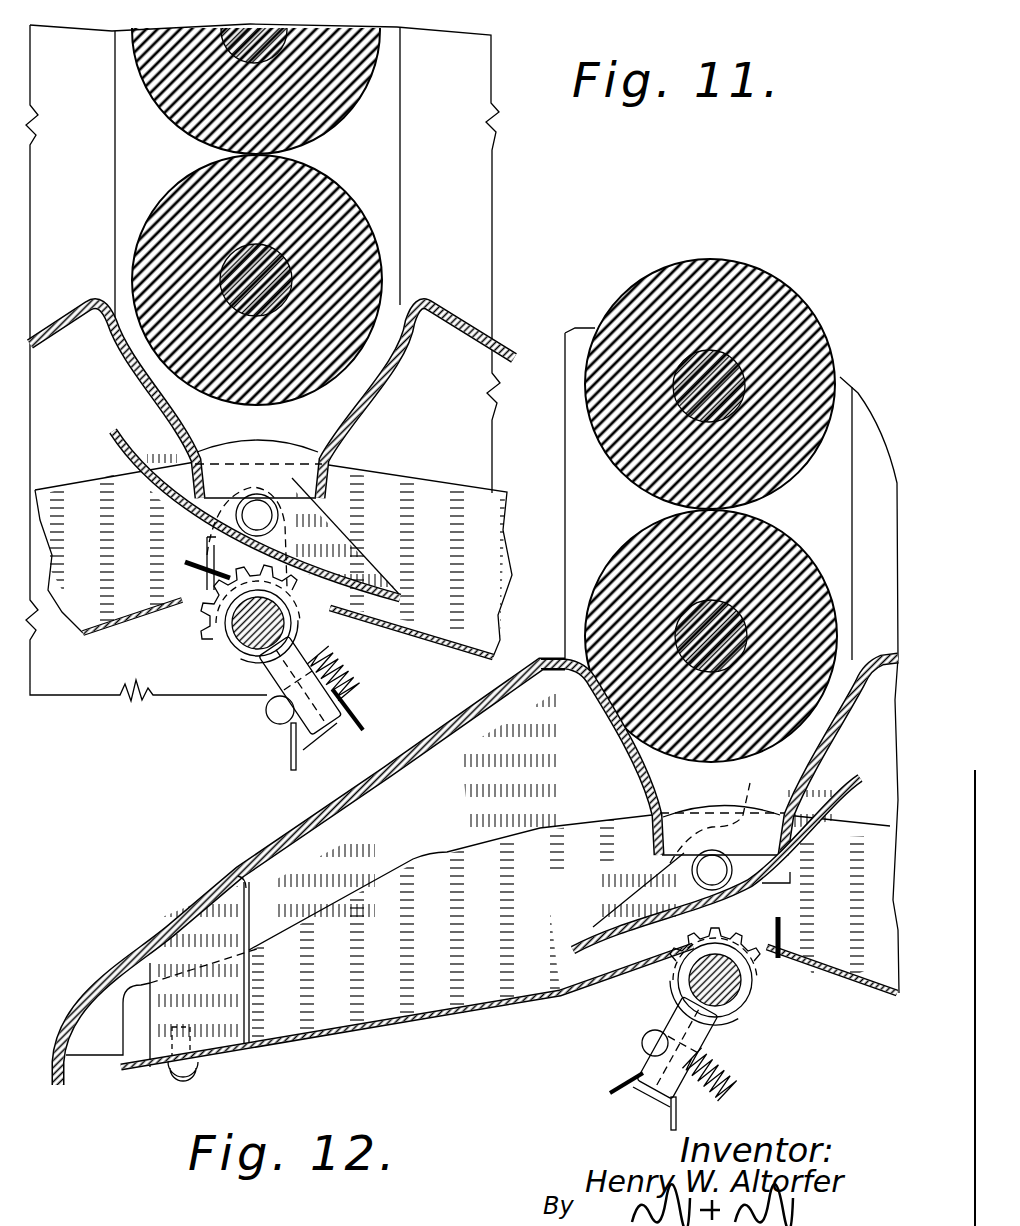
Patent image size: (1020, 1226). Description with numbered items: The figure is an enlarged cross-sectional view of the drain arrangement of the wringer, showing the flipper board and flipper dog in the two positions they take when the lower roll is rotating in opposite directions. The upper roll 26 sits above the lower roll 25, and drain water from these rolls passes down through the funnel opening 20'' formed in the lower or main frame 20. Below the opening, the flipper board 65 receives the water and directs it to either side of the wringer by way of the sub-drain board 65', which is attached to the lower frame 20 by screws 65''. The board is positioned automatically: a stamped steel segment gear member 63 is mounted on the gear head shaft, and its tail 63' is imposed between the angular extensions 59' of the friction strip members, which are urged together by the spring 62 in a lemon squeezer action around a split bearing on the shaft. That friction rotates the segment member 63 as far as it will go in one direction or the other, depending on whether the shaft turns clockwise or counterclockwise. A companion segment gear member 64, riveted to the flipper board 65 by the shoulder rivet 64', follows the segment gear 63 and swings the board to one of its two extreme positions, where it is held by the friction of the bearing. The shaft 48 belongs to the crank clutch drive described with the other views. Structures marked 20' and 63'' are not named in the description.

In FIG. 12, the lower or main frame 20 is at (311, 874).
In FIG. 12, the chute partition plate 20' is at (238, 969).
In FIG. 11, the funnel opening 20'' is at (272, 401).
In FIG. 12, the funnel opening 20'' is at (719, 756).
In FIG. 11, the lower roll 25 is at (353, 217).
In FIG. 12, the lower roll 25 is at (792, 547).
In FIG. 11, the upper roll 26 is at (353, 78).
In FIG. 12, the upper roll 26 is at (793, 318).
In FIG. 11, the shaft 48 is at (250, 626).
In FIG. 12, the shaft 48 is at (707, 985).
In FIG. 11, the angular extensions of the friction members 59' is at (329, 735).
In FIG. 12, the angular extensions of the friction members 59' is at (672, 1084).
In FIG. 11, the spring 62 is at (318, 658).
In FIG. 12, the spring 62 is at (747, 1063).
In FIG. 11, the segment gear member 63 is at (287, 682).
In FIG. 12, the segment gear member 63 is at (694, 1044).
In FIG. 11, the tail of the segment member 63' is at (330, 750).
In FIG. 12, the tail of the segment member 63' is at (632, 1113).
In FIG. 11, the pawl rod 63'' is at (178, 578).
In FIG. 12, the pawl rod 63'' is at (804, 968).
In FIG. 11, the companion segment gear member 64 is at (264, 537).
In FIG. 12, the companion segment gear member 64 is at (750, 851).
In FIG. 11, the shoulder rivet 64' is at (207, 515).
In FIG. 12, the shoulder rivet 64' is at (689, 878).
In FIG. 11, the flipper board 65 is at (230, 514).
In FIG. 12, the flipper board 65 is at (694, 864).
In FIG. 11, the sub-drain board 65' is at (411, 637).
In FIG. 12, the sub-drain board 65' is at (509, 1006).
In FIG. 12, the screws 65'' is at (217, 1082).